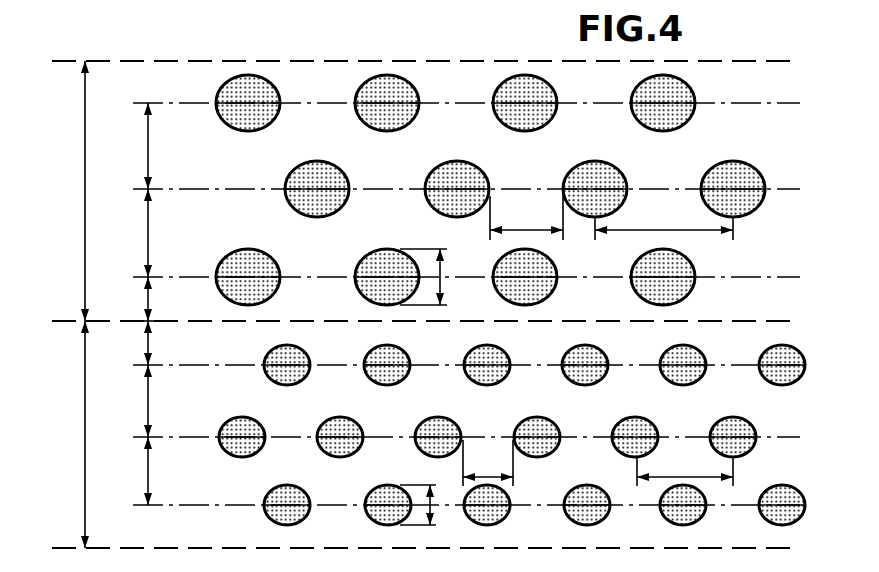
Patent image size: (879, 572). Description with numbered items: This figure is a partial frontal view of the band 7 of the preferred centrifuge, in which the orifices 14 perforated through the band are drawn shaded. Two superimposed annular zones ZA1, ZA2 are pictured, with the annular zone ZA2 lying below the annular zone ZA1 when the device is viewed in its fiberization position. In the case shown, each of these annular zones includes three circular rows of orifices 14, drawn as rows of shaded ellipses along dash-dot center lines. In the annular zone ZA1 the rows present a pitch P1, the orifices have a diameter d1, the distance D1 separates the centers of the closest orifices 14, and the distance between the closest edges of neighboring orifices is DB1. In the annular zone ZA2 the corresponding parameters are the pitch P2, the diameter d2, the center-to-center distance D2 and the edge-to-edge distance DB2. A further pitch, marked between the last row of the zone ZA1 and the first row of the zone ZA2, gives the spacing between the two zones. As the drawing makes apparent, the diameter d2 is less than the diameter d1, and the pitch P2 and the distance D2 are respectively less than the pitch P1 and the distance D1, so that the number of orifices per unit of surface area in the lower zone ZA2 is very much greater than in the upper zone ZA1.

The band 7 is at (720, 90).
The orifices 14 is at (706, 348).
The annular zone ZA1 is at (58, 191).
The annular zone ZA2 is at (58, 434).
The pitch P1 is at (130, 212).
The pitch P2 is at (132, 413).
The distance between closest edges of neighboring orifices DB1 is at (526, 218).
The distance between centers of closest orifices D1 is at (664, 221).
The orifice diameter d1 is at (435, 277).
The distance between closest edges of neighboring orifices DB2 is at (488, 463).
The distance between centers of closest orifices D2 is at (685, 466).
The orifice diameter d2 is at (430, 505).